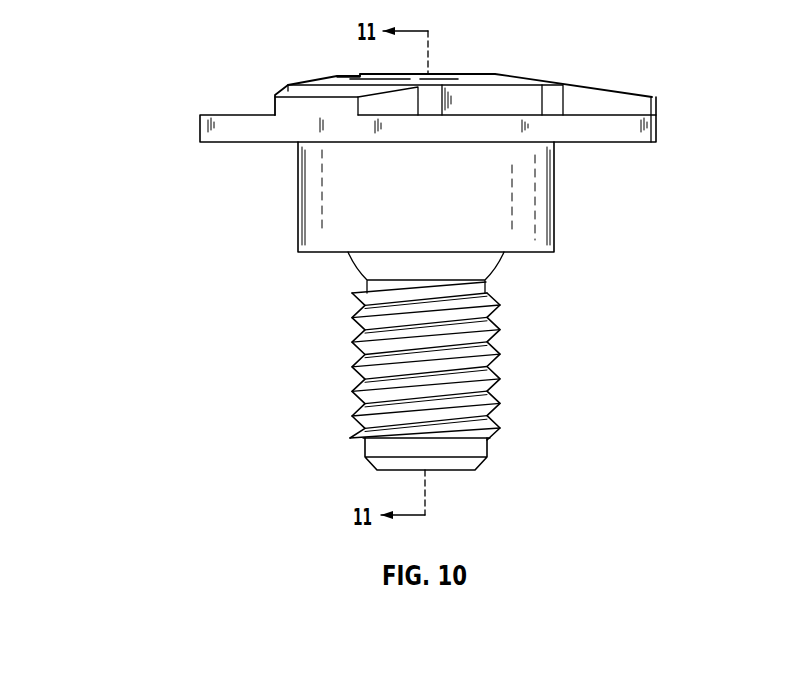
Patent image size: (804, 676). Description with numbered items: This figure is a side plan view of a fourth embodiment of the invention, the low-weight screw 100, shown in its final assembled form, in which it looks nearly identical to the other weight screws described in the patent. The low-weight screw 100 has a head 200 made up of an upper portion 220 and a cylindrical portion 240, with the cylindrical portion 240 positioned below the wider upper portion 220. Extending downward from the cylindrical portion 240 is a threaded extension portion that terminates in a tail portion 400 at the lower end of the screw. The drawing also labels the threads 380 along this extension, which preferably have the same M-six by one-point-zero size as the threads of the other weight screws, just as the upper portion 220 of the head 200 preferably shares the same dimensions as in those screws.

The low-weight screw 100 is at (141, 53).
The head 200 is at (609, 84).
The upper portion 220 is at (657, 122).
The cylindrical portion 240 is at (555, 205).
The threads 380 is at (500, 353).
The tail portion 400 is at (488, 455).